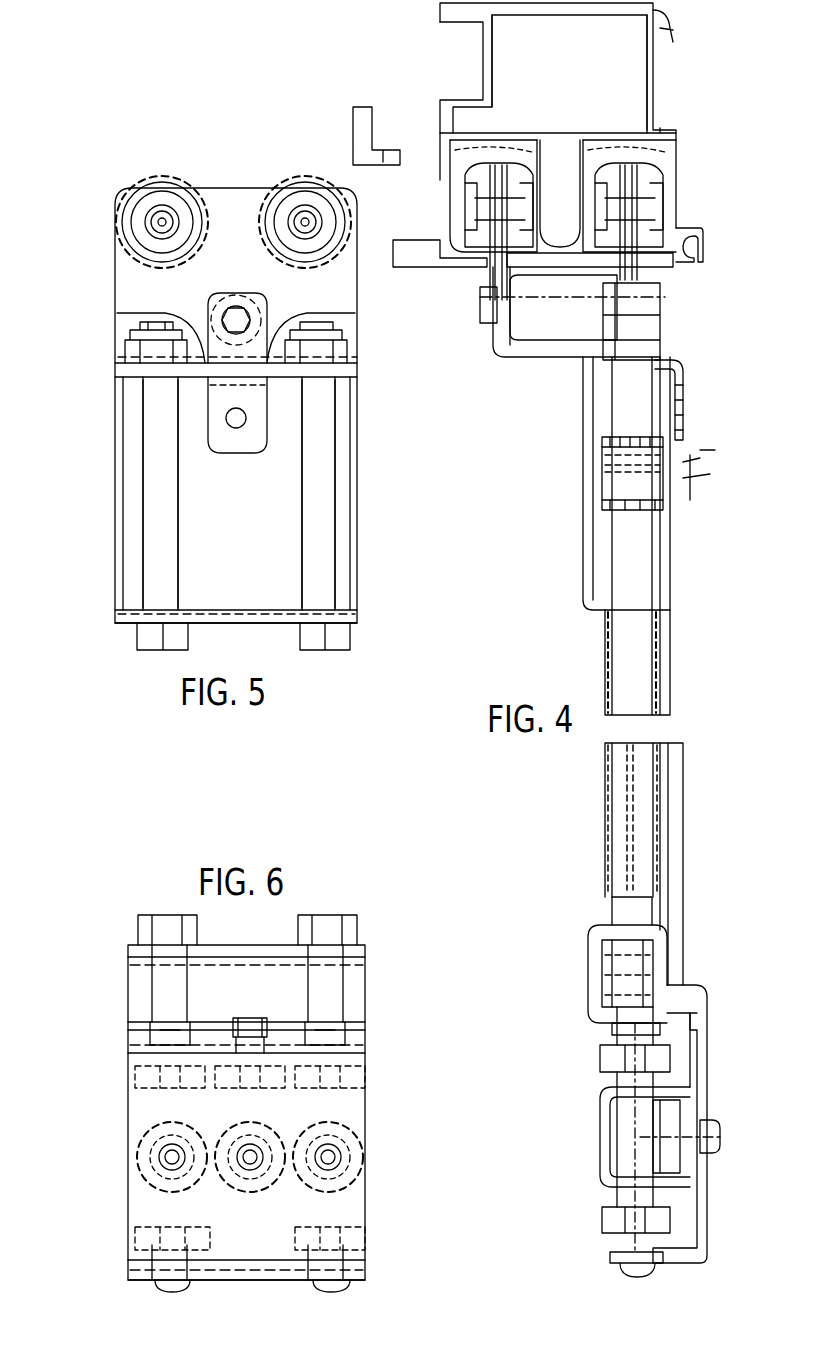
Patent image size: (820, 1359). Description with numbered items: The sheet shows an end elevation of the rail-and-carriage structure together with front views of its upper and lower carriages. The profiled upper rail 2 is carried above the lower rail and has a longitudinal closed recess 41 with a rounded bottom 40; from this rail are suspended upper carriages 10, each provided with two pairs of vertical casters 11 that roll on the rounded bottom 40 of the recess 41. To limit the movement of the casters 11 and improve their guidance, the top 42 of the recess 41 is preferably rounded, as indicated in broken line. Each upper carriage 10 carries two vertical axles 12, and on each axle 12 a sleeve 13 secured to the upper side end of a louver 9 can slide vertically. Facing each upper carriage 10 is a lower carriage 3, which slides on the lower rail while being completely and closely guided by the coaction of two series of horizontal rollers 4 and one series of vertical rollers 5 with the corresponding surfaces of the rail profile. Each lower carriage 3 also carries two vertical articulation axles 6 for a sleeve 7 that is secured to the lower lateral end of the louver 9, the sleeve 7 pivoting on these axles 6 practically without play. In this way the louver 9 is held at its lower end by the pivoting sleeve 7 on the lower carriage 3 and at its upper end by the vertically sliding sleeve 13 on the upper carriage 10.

In FIG. 4, the upper rail 2 is at (655, 96).
In FIG. 4, the lower carriage 3 is at (703, 1082).
In FIG. 6, the lower carriage 3 is at (394, 1046).
In FIG. 4, the horizontal rollers 4 is at (612, 1055).
In FIG. 6, the horizontal rollers 4 is at (355, 1072).
In FIG. 4, the vertical rollers 5 is at (665, 1110).
In FIG. 6, the vertical rollers 5 is at (355, 1124).
In FIG. 4, the vertical articulation axles 6 is at (622, 952).
In FIG. 6, the vertical articulation axles 6 is at (332, 983).
In FIG. 4, the sleeve 7 is at (610, 990).
In FIG. 4, the louver 9 is at (665, 685).
In FIG. 5, the upper carriage 10 is at (82, 298).
In FIG. 4, the upper carriage 10 is at (497, 325).
In FIG. 5, the vertical casters 11 is at (160, 185).
In FIG. 4, the vertical casters 11 is at (650, 178).
In FIG. 5, the vertical axles 12 is at (317, 525).
In FIG. 4, the vertical axles 12 is at (622, 393).
In FIG. 4, the sleeve 13 is at (605, 455).
In FIG. 4, the rounded bottom 40 is at (655, 250).
In FIG. 4, the longitudinal closed recess 41 is at (456, 182).
In FIG. 4, the top of the recess 42 is at (680, 140).